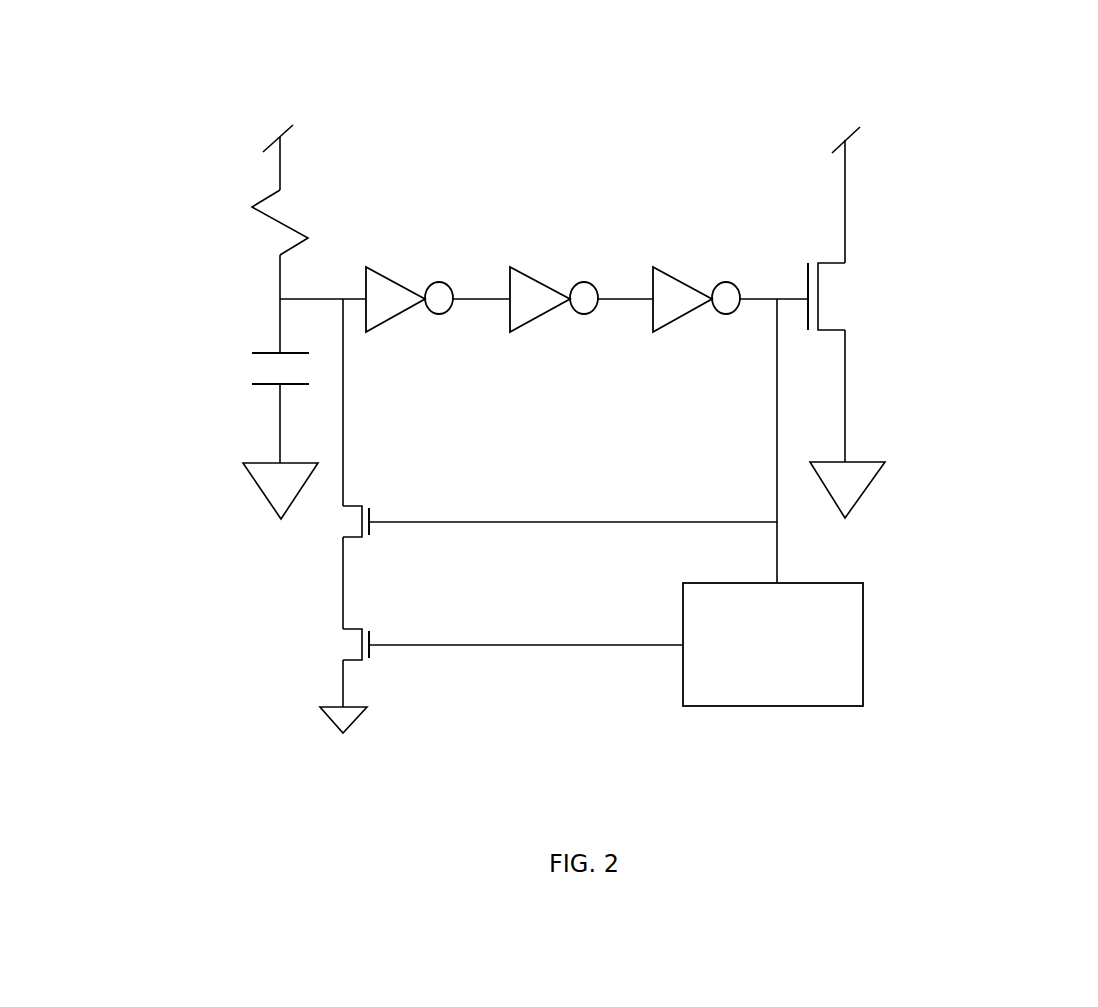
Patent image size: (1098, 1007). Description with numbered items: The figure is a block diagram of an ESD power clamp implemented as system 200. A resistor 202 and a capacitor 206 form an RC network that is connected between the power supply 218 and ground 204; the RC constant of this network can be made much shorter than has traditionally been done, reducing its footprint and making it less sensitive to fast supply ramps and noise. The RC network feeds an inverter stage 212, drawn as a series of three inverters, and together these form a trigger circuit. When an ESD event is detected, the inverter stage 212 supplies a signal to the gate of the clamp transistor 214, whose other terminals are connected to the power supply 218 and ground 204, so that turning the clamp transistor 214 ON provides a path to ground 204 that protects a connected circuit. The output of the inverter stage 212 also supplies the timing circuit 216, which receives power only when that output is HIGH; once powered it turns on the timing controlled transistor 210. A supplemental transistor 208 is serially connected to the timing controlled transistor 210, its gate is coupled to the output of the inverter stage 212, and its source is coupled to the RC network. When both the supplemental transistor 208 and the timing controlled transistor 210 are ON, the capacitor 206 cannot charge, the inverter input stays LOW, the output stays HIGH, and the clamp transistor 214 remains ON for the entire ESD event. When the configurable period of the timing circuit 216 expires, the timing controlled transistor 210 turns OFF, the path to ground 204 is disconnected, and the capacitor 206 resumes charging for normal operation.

The system 200 is at (642, 163).
The resistor 202 is at (240, 207).
The ground 204 is at (240, 491).
The capacitor 206 is at (240, 384).
The supplemental transistor 208 is at (328, 522).
The timing controlled transistor 210 is at (322, 638).
The inverter stage 212 is at (570, 222).
The clamp transistor 214 is at (878, 287).
The timing circuit 216 is at (885, 654).
The power supply 218 is at (561, 115).